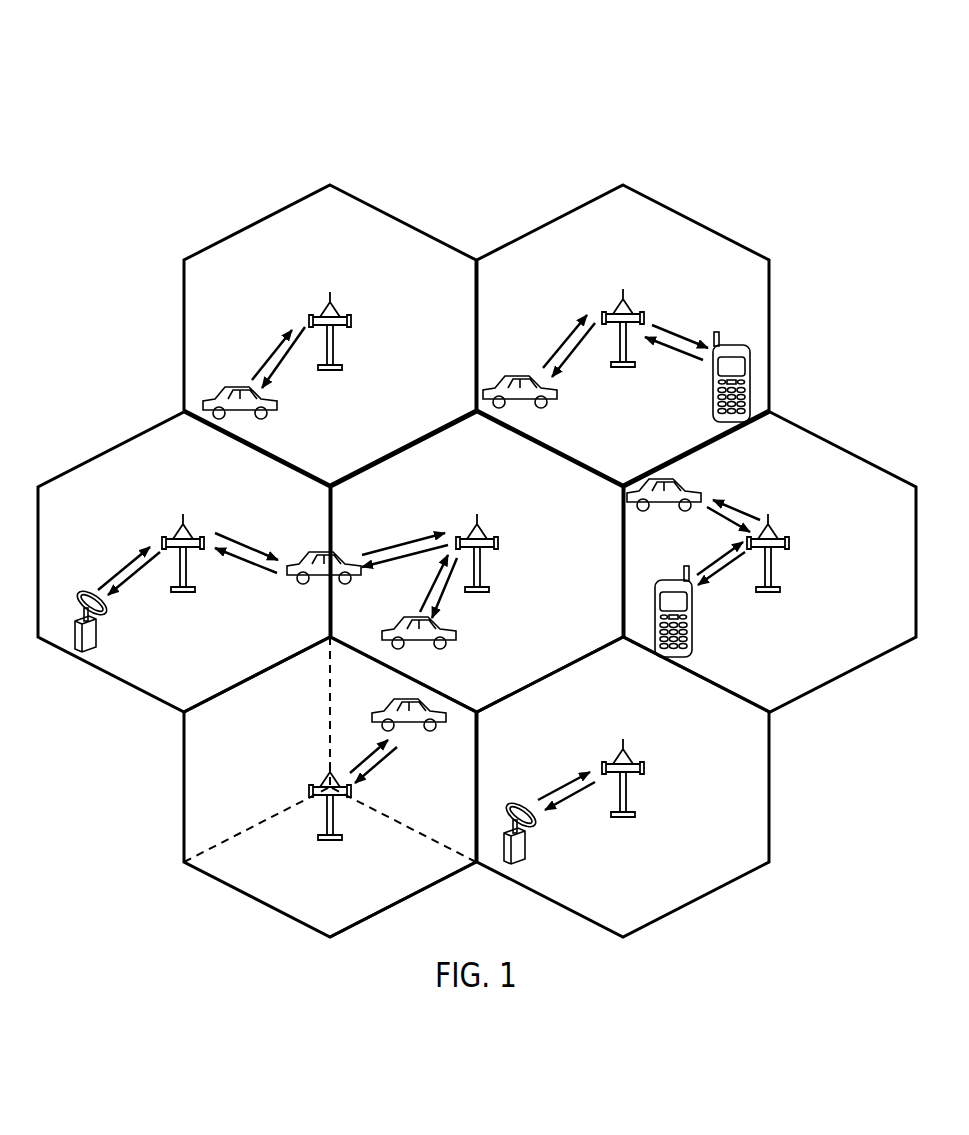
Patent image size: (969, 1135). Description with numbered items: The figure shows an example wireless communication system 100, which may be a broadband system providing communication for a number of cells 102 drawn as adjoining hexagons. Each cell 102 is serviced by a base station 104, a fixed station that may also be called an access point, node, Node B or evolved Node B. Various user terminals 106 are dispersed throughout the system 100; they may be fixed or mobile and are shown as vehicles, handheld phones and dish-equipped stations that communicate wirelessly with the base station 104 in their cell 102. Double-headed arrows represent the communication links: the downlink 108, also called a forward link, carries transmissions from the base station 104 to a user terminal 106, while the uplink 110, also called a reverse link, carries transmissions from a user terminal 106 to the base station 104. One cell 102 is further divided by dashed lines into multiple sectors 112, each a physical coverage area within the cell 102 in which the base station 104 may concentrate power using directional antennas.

The wireless communication system 100 is at (752, 66).
The cell 102 is at (267, 216).
The base station 104 is at (330, 297).
The user terminal 106 is at (281, 413).
The downlink 108 is at (281, 355).
The uplink 110 is at (273, 347).
The sector 112 is at (382, 897).